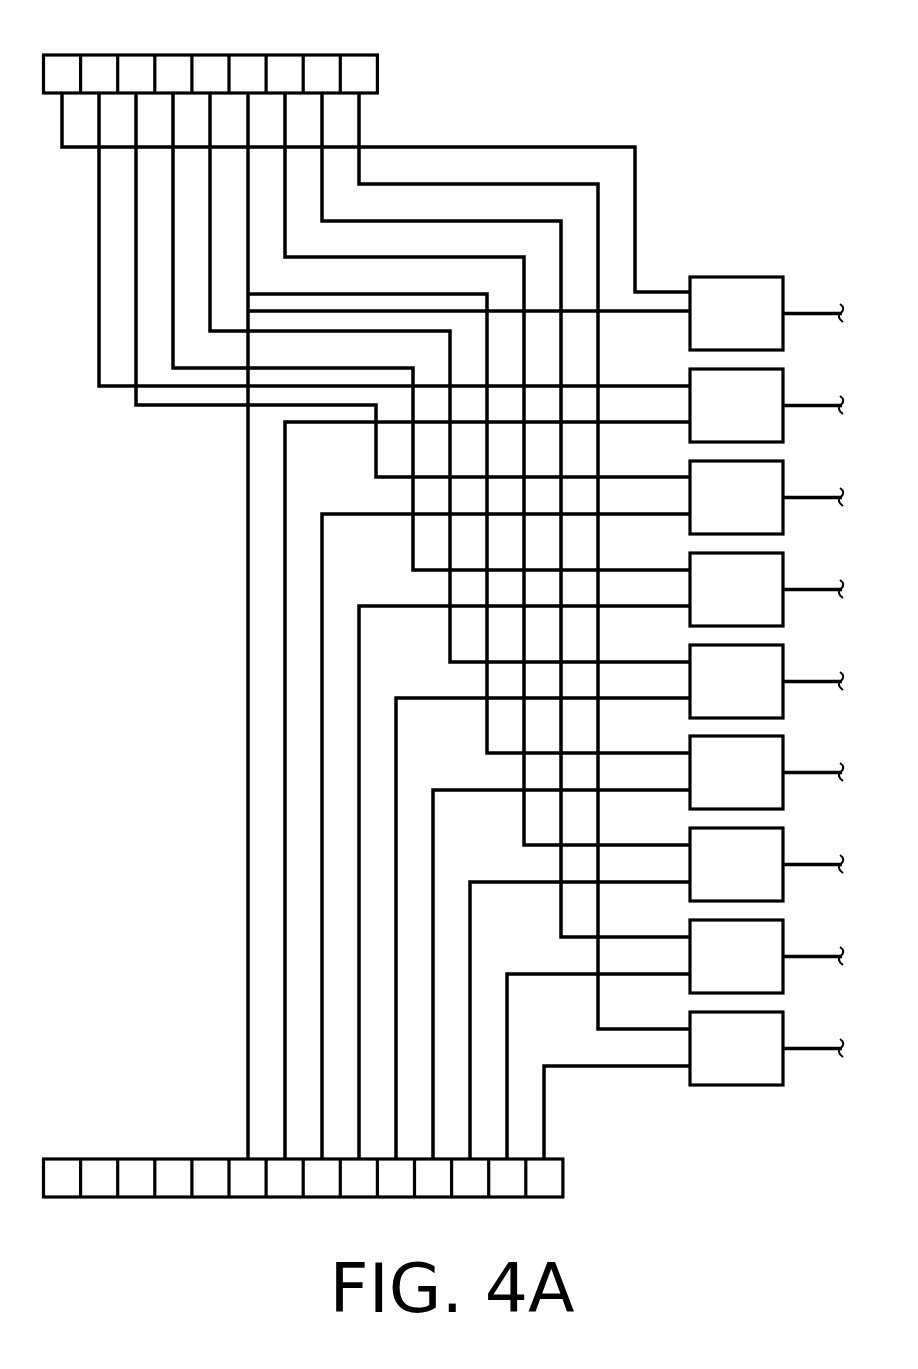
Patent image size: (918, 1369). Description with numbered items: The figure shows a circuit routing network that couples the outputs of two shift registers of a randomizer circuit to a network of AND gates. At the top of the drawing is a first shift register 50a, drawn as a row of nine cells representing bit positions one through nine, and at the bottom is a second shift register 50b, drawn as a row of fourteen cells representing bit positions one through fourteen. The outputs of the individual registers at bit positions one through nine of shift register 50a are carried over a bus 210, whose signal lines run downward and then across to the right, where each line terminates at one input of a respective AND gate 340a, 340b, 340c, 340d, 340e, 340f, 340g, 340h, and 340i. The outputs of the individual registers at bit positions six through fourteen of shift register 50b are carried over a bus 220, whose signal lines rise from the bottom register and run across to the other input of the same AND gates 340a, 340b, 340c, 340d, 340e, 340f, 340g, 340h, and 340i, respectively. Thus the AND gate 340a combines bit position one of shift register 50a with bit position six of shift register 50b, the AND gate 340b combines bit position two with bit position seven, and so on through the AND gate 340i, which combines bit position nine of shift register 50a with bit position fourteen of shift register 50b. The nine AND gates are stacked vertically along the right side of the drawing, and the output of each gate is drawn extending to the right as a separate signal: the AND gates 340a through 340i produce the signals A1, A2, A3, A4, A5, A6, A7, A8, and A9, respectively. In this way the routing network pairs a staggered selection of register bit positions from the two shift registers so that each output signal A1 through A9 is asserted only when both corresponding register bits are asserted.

The shift register 50a is at (267, 54).
The shift register 50b is at (163, 1155).
The bus 210 is at (495, 144).
The bus 220 is at (241, 966).
The AND gate 340a is at (736, 313).
The AND gate 340b is at (736, 405).
The AND gate 340c is at (736, 497).
The AND gate 340d is at (736, 589).
The AND gate 340e is at (736, 681).
The AND gate 340f is at (736, 772).
The AND gate 340g is at (736, 864).
The AND gate 340h is at (736, 956).
The AND gate 340i is at (736, 1048).
The output signal A1 is at (806, 311).
The output signal A2 is at (806, 403).
The output signal A3 is at (806, 495).
The output signal A4 is at (806, 587).
The output signal A5 is at (806, 679).
The output signal A6 is at (806, 770).
The output signal A7 is at (806, 862).
The output signal A8 is at (806, 954).
The output signal A9 is at (806, 1046).